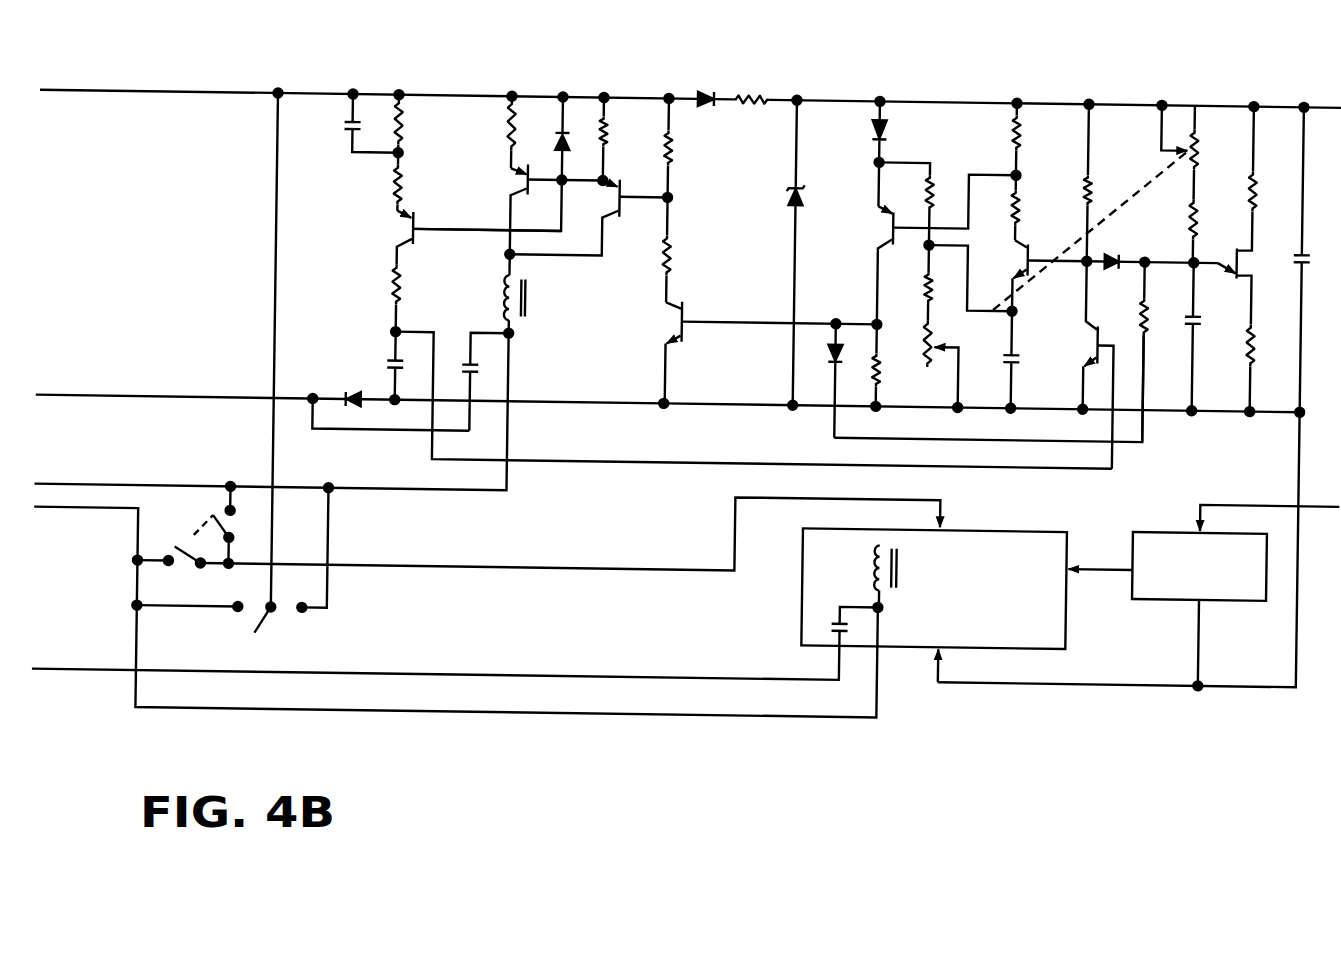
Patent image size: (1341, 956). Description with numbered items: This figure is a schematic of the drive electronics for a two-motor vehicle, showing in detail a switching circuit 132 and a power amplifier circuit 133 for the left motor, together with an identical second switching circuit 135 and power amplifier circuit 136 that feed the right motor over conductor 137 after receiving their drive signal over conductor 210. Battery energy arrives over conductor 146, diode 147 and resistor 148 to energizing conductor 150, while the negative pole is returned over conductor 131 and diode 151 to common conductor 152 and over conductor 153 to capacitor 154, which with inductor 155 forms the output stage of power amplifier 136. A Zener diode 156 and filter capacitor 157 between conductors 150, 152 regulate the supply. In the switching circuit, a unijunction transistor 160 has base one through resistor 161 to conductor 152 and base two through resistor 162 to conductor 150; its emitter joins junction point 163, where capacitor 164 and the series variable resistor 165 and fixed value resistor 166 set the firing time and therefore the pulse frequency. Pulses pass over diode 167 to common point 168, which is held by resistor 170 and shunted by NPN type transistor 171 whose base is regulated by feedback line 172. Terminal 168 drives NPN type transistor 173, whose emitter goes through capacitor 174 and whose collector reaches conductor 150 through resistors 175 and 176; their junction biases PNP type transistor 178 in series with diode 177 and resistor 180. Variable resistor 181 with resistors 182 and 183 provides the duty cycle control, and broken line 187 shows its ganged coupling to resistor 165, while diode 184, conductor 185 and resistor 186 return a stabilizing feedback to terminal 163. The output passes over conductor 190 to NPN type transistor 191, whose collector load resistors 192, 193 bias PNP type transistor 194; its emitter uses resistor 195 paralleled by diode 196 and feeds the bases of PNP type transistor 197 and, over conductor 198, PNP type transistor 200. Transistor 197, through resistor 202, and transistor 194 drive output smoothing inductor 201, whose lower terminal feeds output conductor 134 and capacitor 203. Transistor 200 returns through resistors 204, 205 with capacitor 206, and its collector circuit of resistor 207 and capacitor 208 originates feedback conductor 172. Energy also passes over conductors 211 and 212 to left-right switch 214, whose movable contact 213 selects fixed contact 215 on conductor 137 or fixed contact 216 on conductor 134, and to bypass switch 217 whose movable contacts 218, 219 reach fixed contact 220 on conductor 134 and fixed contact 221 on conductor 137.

The conductor 131 is at (350, 388).
The switching circuit 132 is at (997, 42).
The power amplifier circuit 133 is at (590, 32).
The output conductor 134 is at (271, 421).
The second switching circuit 135 is at (1138, 594).
The power amplifier circuit 136 is at (934, 588).
The conductor 137 is at (455, 624).
The conductor 146 is at (386, 85).
The diode 147 is at (700, 89).
The resistor 148 is at (753, 88).
The energizing conductor 150 is at (1055, 96).
The diode 151 is at (389, 398).
The common conductor 152 is at (982, 554).
The conductor 153 is at (436, 650).
The capacitor 154 is at (831, 610).
The inductor 155 is at (866, 576).
The Zener diode 156 is at (774, 255).
The filter capacitor 157 is at (1316, 260).
The unijunction transistor 160 is at (1252, 268).
The resistor 161 is at (1271, 369).
The resistor 162 is at (1272, 160).
The junction point 163 is at (1180, 274).
The capacitor 164 is at (1208, 337).
The variable resistor 165 is at (1205, 152).
The fixed value resistor 166 is at (1214, 232).
The diode 167 is at (1118, 249).
The common point 168 is at (1059, 272).
The resistor 170 is at (1106, 183).
The NPN type transistor 171 is at (1088, 365).
The feedback line 172 is at (754, 413).
The NPN type transistor 173 is at (1007, 298).
The capacitor 174 is at (1027, 382).
The resistor 175 is at (1035, 208).
The resistor 176 is at (1035, 141).
The diode 177 is at (897, 134).
The PNP type transistor 178 is at (932, 244).
The resistor 180 is at (901, 373).
The variable resistor 181 is at (933, 332).
The fixed value resistor 182 is at (909, 283).
The fixed value resistor 183 is at (945, 236).
The diode 184 is at (818, 380).
The conductor 185 is at (1147, 419).
The resistor 186 is at (1123, 352).
The broken line 187 is at (1125, 201).
The conductor 190 is at (782, 315).
The NPN type transistor 191 is at (658, 354).
The resistor 192 is at (688, 250).
The resistor 193 is at (688, 150).
The PNP type transistor 194 is at (589, 217).
The resistor 195 is at (605, 141).
The diode 196 is at (491, 163).
The PNP type transistor 197 is at (523, 212).
The conductor 198 is at (487, 243).
The PNP type transistor 200 is at (393, 237).
The output smoothing inductor 201 is at (498, 296).
The resistor 202 is at (492, 132).
The capacitor 203 is at (485, 382).
The resistor 204 is at (418, 182).
The resistor 205 is at (419, 124).
The capacitor 206 is at (355, 125).
The resistor 207 is at (418, 301).
The capacitor 208 is at (380, 365).
The conductor 210 is at (1100, 557).
The conductor 211 is at (258, 351).
The conductor 212 is at (570, 544).
The movable contact 213 is at (264, 635).
The left-right switch 214 is at (318, 598).
The fixed contact 215 is at (190, 598).
The fixed contact 216 is at (308, 610).
The bypass switch 217 is at (226, 556).
The movable contact 218 is at (184, 544).
The movable contact 219 is at (228, 524).
The fixed contact 220 is at (232, 508).
The fixed contact 221 is at (155, 573).